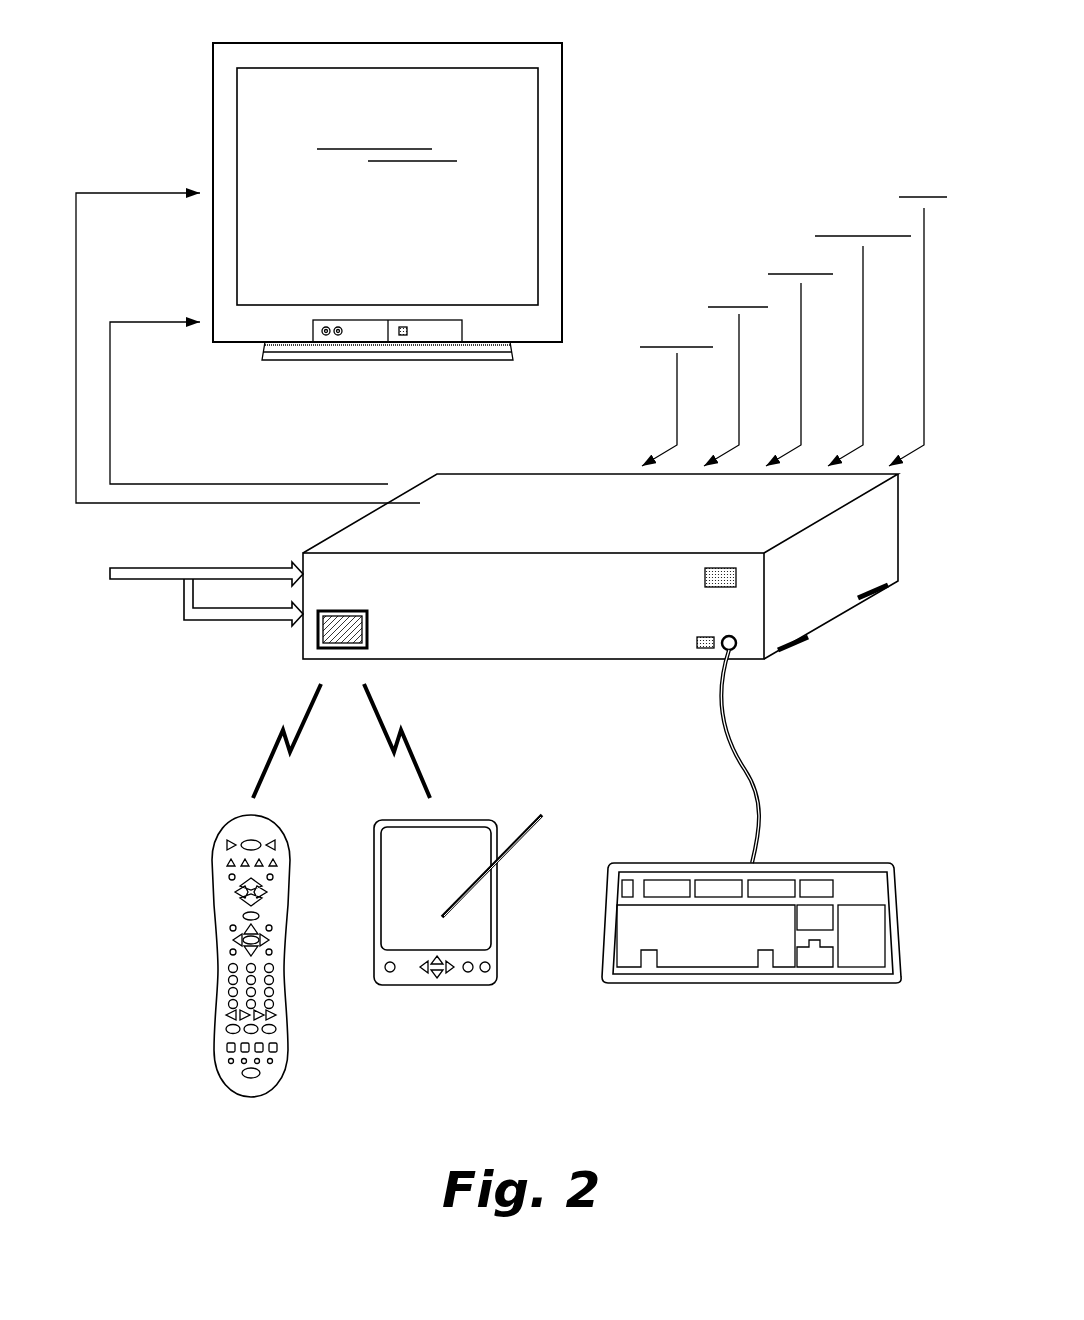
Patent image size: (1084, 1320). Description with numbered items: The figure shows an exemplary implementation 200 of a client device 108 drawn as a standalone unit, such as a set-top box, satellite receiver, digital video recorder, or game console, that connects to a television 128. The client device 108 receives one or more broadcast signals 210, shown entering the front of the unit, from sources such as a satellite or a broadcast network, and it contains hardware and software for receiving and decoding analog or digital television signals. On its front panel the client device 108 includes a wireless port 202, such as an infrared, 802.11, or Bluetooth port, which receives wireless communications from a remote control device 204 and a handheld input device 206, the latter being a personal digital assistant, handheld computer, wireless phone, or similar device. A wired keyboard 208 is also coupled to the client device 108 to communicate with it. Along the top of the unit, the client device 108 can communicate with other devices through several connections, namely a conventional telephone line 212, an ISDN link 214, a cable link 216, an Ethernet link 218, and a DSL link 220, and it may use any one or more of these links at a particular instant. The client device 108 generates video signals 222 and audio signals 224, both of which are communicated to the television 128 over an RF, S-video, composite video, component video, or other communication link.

The exemplary implementation 200 is at (688, 70).
The television 128 is at (510, 293).
The video signal(s) 222 is at (172, 226).
The audio signal(s) 224 is at (172, 356).
The client device 108 is at (505, 473).
The wireless port 202 is at (357, 612).
The broadcast signal(s) 210 is at (168, 580).
The conventional telephone line 212 is at (678, 304).
The ISDN link 214 is at (740, 266).
The cable link 216 is at (800, 231).
The Ethernet link 218 is at (863, 194).
The DSL link 220 is at (923, 158).
The remote control device 204 is at (215, 843).
The handheld input device 206 is at (457, 819).
The wired keyboard 208 is at (800, 863).